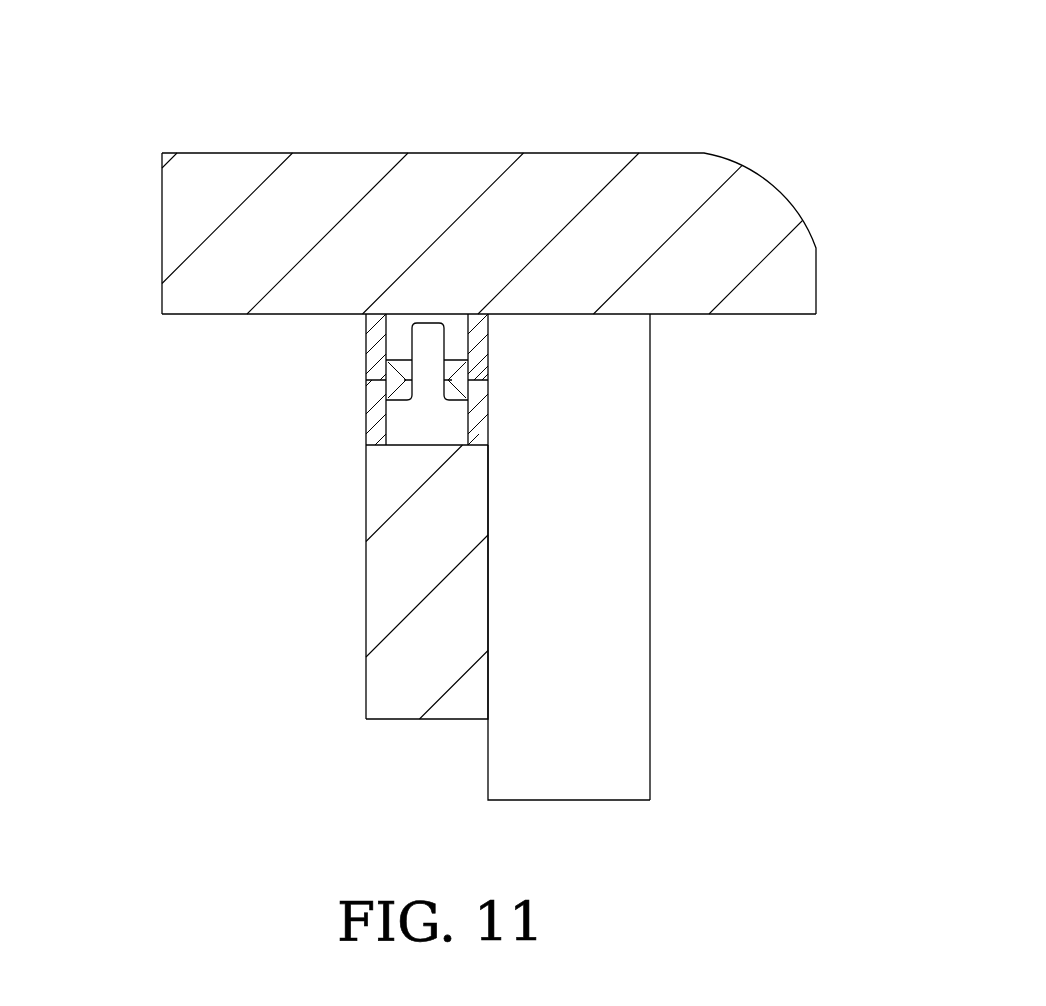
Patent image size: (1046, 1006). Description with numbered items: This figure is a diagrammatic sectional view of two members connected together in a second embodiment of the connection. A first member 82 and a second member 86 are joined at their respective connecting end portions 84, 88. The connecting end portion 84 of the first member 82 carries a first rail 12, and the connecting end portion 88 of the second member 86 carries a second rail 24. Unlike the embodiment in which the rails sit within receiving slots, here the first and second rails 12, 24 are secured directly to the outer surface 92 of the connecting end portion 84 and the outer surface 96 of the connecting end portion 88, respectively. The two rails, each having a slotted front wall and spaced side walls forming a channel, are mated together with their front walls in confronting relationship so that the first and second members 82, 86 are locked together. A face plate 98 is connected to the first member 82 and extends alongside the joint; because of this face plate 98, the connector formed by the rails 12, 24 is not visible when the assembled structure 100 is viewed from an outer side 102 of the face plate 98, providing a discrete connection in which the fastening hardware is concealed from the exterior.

The structure 100 is at (238, 113).
The second member 86 is at (421, 275).
The connecting end portion 88 is at (292, 292).
The outer surface 96 is at (200, 315).
The second rail 24 is at (485, 335).
The first rail 12 is at (485, 392).
The first member 82 is at (327, 599).
The connecting end portion 84 is at (378, 468).
The outer surface 92 is at (410, 445).
The face plate 98 is at (700, 557).
The outer side 102 is at (650, 520).